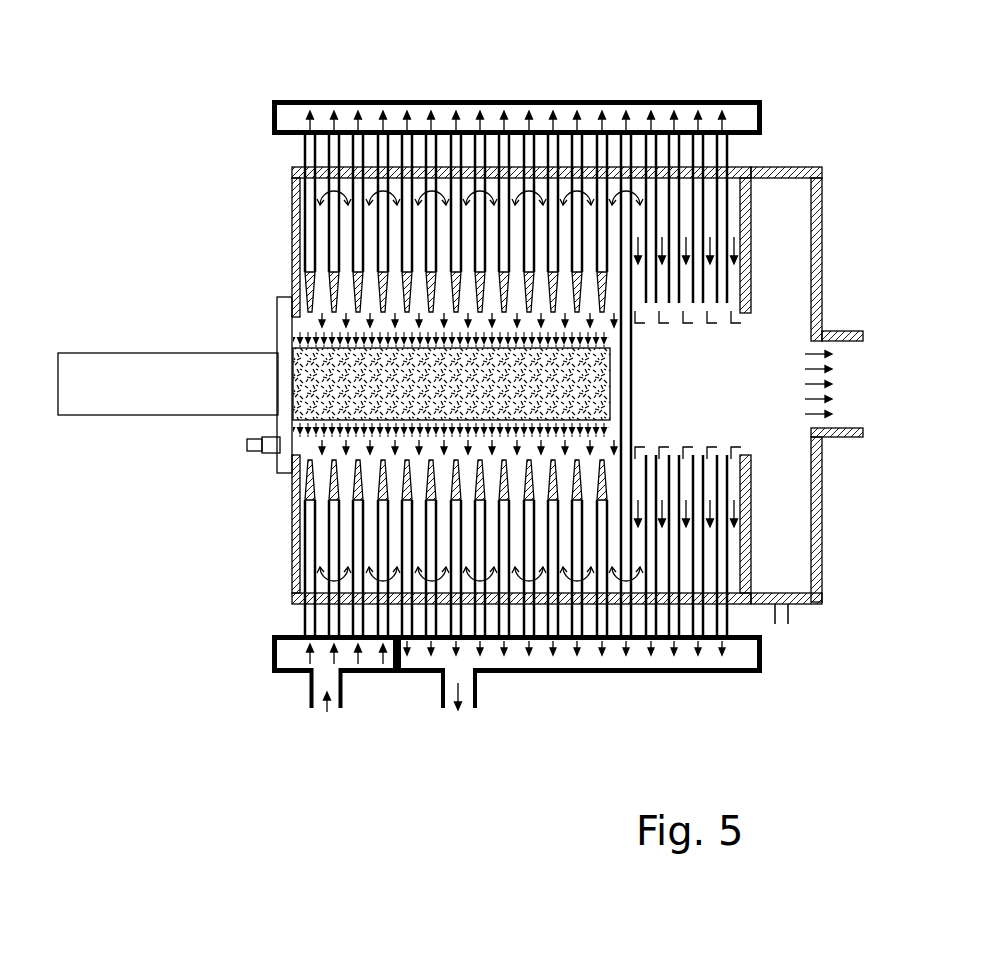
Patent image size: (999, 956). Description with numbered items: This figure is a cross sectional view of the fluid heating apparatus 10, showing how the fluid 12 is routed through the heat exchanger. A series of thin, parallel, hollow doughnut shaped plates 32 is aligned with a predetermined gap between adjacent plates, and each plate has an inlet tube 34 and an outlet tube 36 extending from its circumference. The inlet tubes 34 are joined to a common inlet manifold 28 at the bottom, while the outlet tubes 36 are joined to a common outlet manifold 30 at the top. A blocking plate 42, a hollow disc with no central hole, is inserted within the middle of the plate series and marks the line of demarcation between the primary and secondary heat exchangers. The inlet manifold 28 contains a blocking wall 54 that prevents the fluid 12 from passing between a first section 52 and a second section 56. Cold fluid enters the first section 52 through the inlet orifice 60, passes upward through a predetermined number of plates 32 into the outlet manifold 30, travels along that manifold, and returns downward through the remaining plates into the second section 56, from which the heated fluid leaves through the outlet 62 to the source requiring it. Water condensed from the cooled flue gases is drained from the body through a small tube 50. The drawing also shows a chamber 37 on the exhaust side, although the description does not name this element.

The fluid heating apparatus 10 is at (237, 146).
The fluid 12 is at (320, 718).
The inlet manifold 28 is at (715, 673).
The outlet manifold 30 is at (707, 96).
The hollow doughnut shaped plates 32 is at (720, 290).
The inlet tubes 34 is at (292, 543).
The outlet tubes 36 is at (737, 152).
The lower return chamber 37 is at (755, 481).
The blocking plate 42 is at (745, 270).
The small tube 50 is at (802, 612).
The first section 52 is at (290, 653).
The blocking wall 54 is at (400, 668).
The second section 56 is at (767, 673).
The inlet orifice 60 is at (305, 690).
The outlet 62 is at (478, 702).